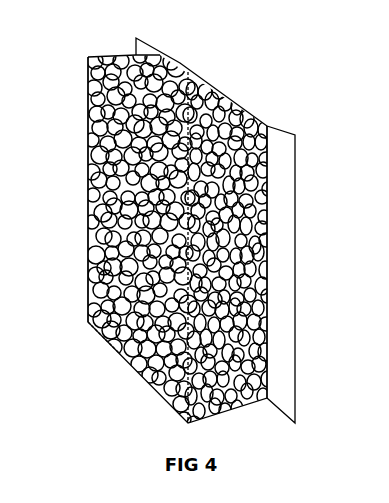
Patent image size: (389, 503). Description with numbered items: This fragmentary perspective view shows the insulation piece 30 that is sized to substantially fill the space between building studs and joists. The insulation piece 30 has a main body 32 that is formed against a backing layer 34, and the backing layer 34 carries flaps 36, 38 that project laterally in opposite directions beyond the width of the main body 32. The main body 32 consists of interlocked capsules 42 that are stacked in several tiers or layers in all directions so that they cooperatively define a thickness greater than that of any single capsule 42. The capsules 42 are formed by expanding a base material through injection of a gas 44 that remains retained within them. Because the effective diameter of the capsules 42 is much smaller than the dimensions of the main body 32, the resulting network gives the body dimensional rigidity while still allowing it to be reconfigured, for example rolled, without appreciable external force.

The insulation piece 30 is at (223, 92).
The main body 32 is at (243, 174).
The backing layer 34 is at (282, 225).
The flap 36 is at (280, 276).
The flap 38 is at (142, 47).
The capsules 42 is at (88, 235).
The gas 44 is at (85, 325).